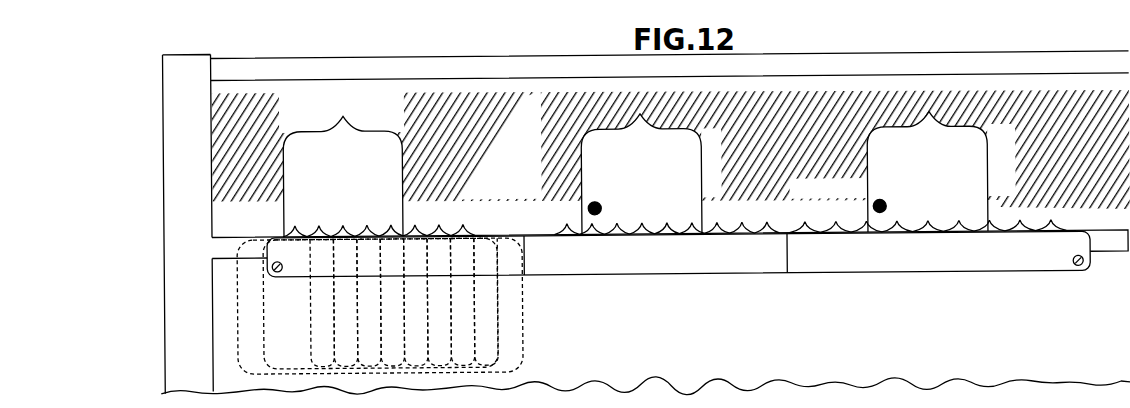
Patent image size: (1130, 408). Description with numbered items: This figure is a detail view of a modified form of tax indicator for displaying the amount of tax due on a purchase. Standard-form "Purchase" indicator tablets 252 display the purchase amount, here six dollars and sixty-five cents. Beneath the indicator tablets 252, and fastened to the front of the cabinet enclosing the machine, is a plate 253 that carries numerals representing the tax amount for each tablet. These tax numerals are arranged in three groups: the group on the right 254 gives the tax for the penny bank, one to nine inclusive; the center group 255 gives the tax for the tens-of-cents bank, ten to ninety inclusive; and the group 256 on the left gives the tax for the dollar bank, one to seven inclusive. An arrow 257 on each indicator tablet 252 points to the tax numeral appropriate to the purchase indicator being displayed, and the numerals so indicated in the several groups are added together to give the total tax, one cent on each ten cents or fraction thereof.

The indicator tablet 252 is at (352, 127).
The plate 253 is at (1040, 270).
The right group of tax numerals 254 is at (968, 254).
The center group of tax numerals 255 is at (701, 260).
The left group of tax numerals 256 is at (338, 252).
The arrow 257 is at (641, 226).